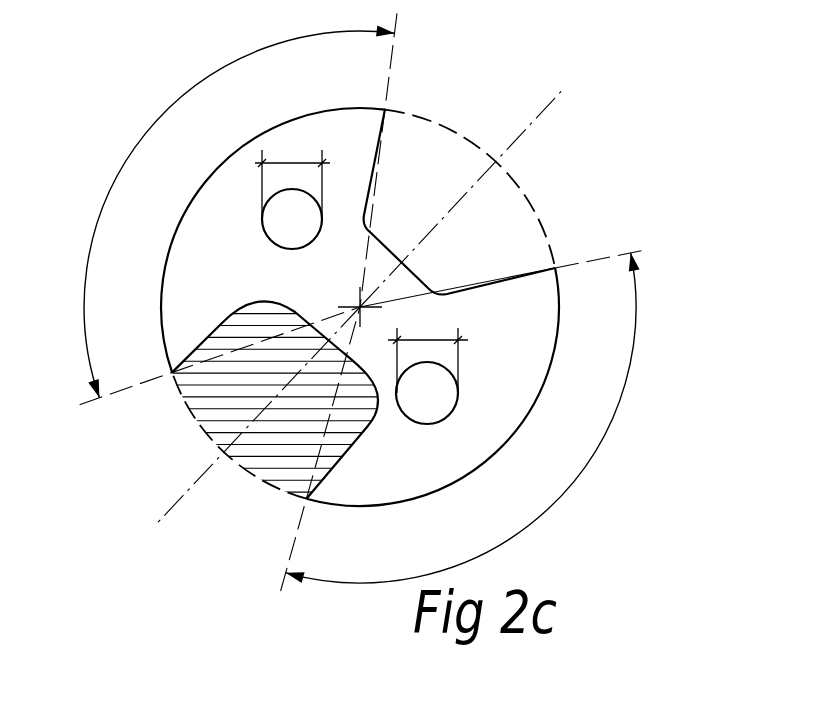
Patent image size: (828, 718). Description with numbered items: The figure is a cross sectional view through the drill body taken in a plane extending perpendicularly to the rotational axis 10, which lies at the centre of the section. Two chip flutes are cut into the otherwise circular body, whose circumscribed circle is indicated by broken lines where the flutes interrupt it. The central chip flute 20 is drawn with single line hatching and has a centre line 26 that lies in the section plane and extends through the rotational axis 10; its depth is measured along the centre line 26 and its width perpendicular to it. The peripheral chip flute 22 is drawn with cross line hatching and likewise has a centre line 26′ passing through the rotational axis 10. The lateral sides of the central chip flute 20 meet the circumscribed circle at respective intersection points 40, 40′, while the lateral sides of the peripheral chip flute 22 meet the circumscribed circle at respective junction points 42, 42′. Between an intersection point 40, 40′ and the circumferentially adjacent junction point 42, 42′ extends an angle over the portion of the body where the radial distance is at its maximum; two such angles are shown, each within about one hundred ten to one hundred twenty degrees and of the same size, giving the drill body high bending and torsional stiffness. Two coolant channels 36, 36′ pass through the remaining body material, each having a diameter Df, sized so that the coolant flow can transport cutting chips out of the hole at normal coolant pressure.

The rotational axis 10 is at (357, 298).
The central chip flute 20 is at (255, 447).
The peripheral chip flute 22 is at (449, 147).
The centre line 26 is at (175, 507).
The centre line 26′ is at (537, 117).
The coolant channel 36 is at (283, 221).
The coolant channel 36′ is at (430, 397).
The intersection point 40 is at (160, 388).
The intersection point 40′ is at (291, 512).
The junction point 42 is at (397, 94).
The junction point 42′ is at (569, 254).
The coolant channel diameter Df is at (361, 261).